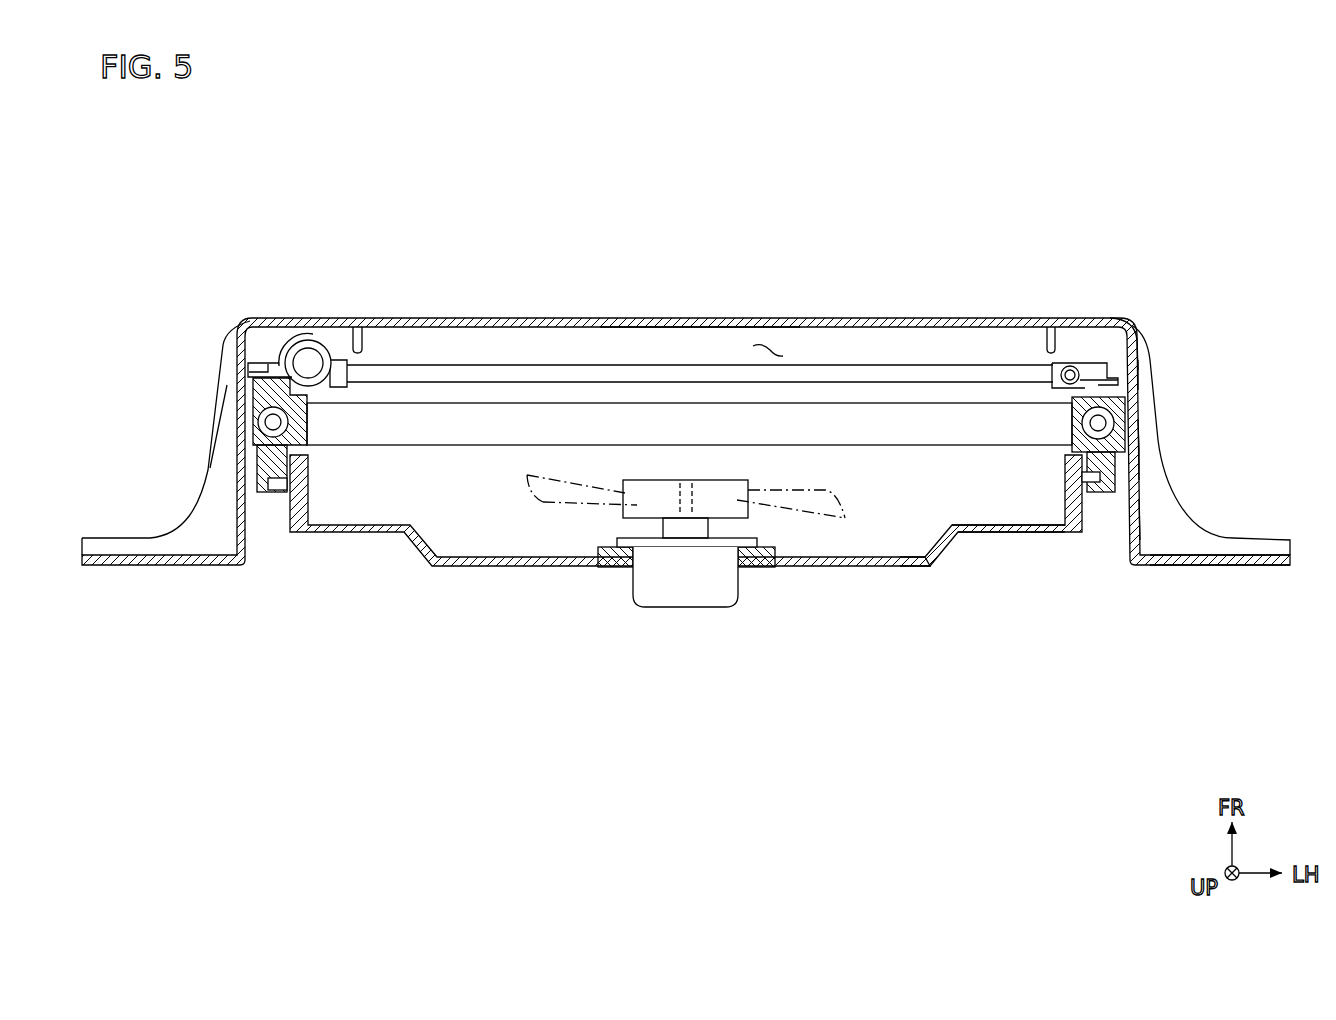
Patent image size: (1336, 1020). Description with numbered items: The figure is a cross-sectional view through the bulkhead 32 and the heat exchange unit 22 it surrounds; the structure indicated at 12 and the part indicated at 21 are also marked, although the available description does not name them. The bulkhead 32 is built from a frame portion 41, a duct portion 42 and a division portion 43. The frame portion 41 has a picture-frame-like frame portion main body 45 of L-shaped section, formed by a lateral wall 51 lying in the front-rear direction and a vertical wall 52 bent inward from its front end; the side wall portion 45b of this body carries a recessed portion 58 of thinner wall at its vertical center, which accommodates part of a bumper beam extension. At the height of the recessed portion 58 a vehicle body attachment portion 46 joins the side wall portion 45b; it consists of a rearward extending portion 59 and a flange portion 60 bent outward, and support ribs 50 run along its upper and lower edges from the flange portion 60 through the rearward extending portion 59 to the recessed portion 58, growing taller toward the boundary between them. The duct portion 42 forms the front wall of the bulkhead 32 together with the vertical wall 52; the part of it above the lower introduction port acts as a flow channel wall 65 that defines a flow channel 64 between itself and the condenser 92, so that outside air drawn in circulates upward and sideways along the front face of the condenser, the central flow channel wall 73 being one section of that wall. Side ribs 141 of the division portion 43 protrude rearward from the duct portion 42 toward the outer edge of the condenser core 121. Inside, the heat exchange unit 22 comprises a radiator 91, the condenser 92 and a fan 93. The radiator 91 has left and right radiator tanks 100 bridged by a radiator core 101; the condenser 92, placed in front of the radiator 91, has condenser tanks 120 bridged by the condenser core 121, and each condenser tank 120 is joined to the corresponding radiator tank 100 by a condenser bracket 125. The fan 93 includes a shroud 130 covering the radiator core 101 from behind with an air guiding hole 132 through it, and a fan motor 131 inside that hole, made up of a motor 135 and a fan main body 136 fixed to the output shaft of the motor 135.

The vehicle roof device 12 is at (1190, 212).
The heat exchange unit 22 is at (492, 597).
The bulkhead 32 is at (694, 446).
The roof panel 21 is at (694, 446).
The frame portion 41 is at (1142, 436).
The duct portion 42 is at (686, 417).
The flow channel wall 65 is at (887, 316).
The division portion 43 is at (1062, 343).
The frame portion main body 45 is at (1218, 463).
The side wall portion 45b is at (1138, 463).
The vehicle body attachment portion 46 is at (1245, 570).
The support ribs 50 is at (1185, 523).
The lateral wall 51 is at (1132, 352).
The vertical wall 52 is at (1120, 326).
The recessed portion 58 is at (1140, 367).
The rearward extending portion 59 is at (1128, 520).
The flange portion 60 is at (1203, 568).
The flow channel 64 is at (775, 345).
The central flow channel wall 73 is at (707, 320).
The radiator 91 is at (689, 513).
The condenser 92 is at (691, 323).
The fan 93 is at (686, 565).
The radiator tanks 100 is at (270, 458).
The radiator core 101 is at (345, 432).
The condenser tanks 120 is at (318, 352).
The condenser core 121 is at (620, 370).
The condenser brackets 125 is at (292, 338).
The shroud 130 is at (1003, 533).
The fan motor 131 is at (763, 574).
The air guiding hole 132 is at (926, 567).
The motor 135 is at (667, 588).
The fan main body 136 is at (728, 500).
The side ribs 141 is at (1045, 343).